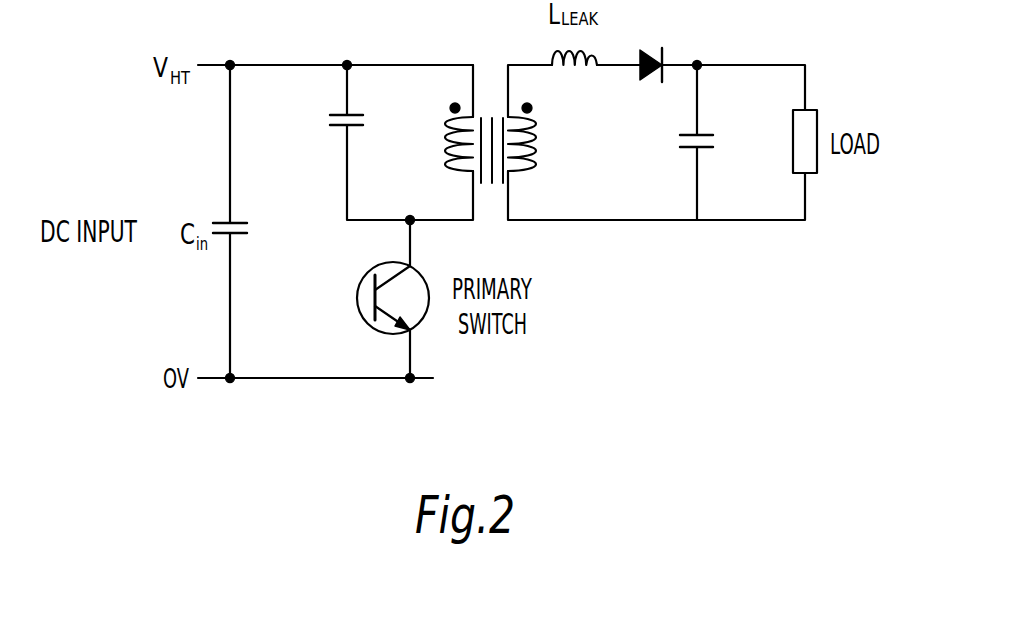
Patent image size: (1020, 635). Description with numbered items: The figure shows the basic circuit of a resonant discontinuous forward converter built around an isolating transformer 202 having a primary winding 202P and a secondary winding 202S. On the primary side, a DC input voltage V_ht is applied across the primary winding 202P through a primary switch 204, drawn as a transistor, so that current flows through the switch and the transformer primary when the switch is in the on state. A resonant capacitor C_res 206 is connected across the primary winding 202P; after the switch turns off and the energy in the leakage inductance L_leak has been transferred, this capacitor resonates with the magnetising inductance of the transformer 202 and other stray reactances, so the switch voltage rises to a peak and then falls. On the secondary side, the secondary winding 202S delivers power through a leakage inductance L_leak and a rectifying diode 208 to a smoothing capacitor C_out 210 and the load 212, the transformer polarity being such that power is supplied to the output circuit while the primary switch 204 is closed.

The isolating transformer 202 is at (488, 99).
The primary winding 202P is at (445, 122).
The secondary winding 202S is at (536, 137).
The switch 204 is at (358, 298).
The C_res 206 is at (333, 113).
The rectifying diode 208 is at (642, 50).
The smoothing capacitor 210 is at (682, 133).
The load 212 is at (793, 142).